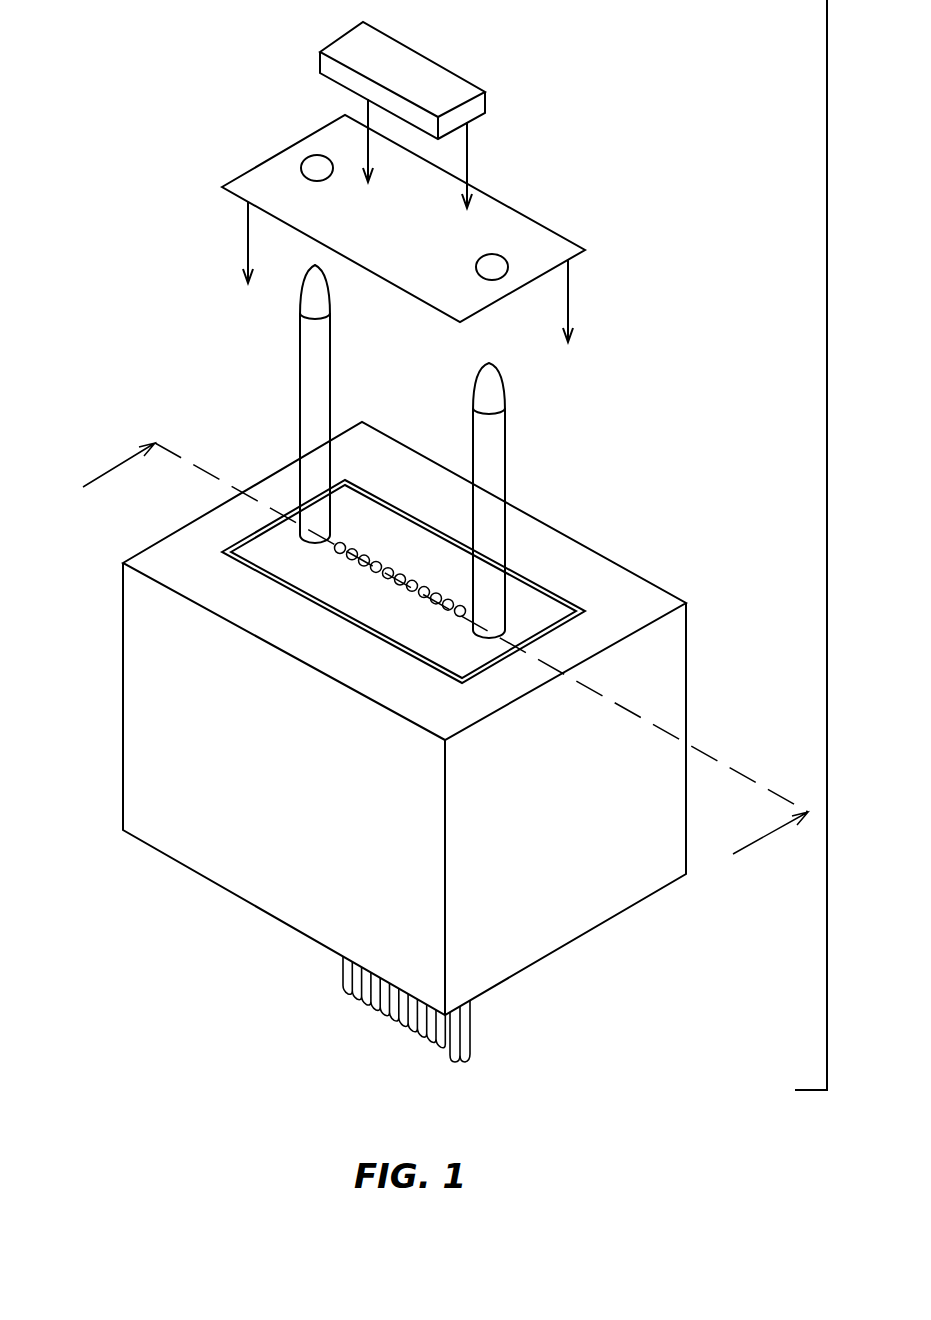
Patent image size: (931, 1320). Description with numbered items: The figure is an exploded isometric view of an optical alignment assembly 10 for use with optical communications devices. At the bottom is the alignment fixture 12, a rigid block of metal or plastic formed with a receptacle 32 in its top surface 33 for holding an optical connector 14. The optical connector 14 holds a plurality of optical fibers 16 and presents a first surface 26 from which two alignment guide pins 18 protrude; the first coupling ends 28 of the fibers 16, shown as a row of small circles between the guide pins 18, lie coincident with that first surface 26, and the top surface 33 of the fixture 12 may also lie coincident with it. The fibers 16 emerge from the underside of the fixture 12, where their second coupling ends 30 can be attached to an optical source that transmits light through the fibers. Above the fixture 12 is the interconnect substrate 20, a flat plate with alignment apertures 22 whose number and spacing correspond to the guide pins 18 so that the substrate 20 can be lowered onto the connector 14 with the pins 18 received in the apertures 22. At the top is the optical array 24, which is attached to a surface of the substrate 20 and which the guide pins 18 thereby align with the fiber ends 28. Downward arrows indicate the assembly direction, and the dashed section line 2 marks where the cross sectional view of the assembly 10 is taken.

The alignment assembly 10 is at (740, 392).
The fixture 12 is at (688, 693).
The optical connector 14 is at (565, 598).
The optical fibers 16 is at (470, 1028).
The alignment guide pins 18 is at (505, 452).
The interconnect substrate 20 is at (427, 305).
The alignment apertures 22 is at (493, 257).
The optical array 24 is at (447, 67).
The first surface of the optical connector 26 is at (260, 573).
The first coupling ends 28 is at (373, 555).
The second coupling end 30 is at (377, 1012).
The receptacle 32 is at (333, 615).
The top surface of the fixture 33 is at (395, 703).
The section line 2— 2 is at (431, 666).